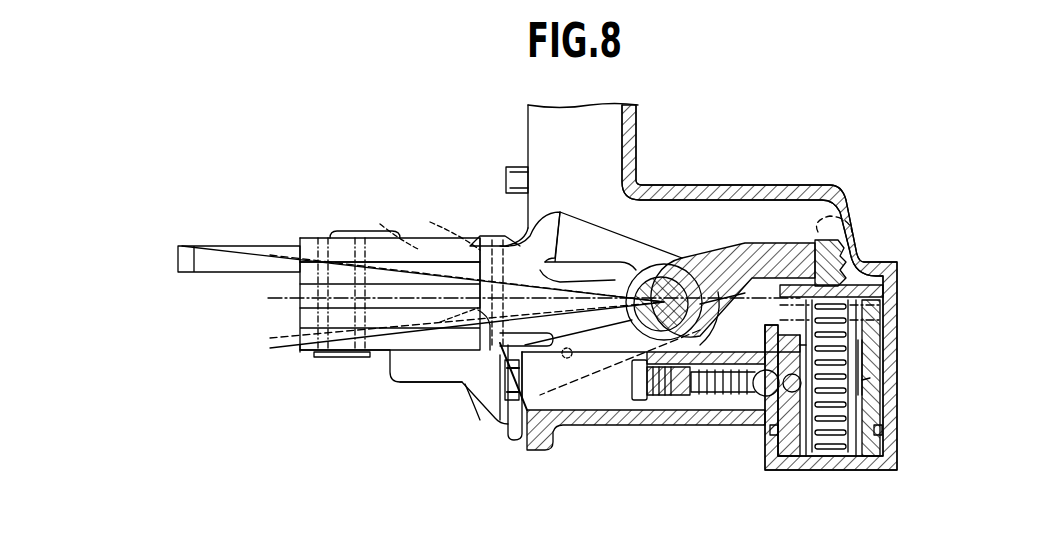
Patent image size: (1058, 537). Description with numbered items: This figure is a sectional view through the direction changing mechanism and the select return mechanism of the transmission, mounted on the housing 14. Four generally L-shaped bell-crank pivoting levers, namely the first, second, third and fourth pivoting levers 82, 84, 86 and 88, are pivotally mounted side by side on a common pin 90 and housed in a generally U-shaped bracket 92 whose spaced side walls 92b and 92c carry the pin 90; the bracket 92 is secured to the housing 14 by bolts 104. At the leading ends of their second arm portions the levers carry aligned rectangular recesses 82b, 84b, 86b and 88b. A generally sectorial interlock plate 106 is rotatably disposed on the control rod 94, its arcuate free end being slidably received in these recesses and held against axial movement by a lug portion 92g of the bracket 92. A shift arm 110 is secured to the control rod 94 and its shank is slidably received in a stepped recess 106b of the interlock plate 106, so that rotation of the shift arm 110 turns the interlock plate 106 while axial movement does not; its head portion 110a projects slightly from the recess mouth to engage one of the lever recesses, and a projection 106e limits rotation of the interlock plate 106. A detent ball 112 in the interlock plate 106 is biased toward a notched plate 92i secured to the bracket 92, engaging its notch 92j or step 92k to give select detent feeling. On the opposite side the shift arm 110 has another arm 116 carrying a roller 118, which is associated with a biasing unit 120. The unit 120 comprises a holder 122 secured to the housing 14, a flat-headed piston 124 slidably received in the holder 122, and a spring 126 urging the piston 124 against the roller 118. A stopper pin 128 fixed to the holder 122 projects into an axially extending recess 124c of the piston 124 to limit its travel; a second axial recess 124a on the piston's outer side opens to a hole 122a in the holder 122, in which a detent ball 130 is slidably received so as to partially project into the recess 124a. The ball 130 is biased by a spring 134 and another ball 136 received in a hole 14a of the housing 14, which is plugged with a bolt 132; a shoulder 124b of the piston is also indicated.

The housing 14 is at (640, 122).
The hole 14a is at (672, 402).
The first pivoting lever 82 is at (300, 328).
The rectangular recess 82b is at (480, 347).
The second pivoting lever 84 is at (300, 306).
The rectangular recess 84b is at (436, 336).
The third pivoting lever 86 is at (300, 284).
The rectangular recess 86b is at (391, 222).
The fourth pivoting lever 88 is at (224, 258).
The rectangular recess 88b is at (446, 226).
The common pin 90 is at (330, 358).
The bracket 92 is at (370, 356).
The side wall 92b is at (300, 352).
The side wall 92c is at (320, 240).
The lug portion 92g is at (553, 340).
The notched plate 92i is at (408, 384).
The notch 92j is at (506, 404).
The step 92k is at (490, 372).
The control rod 94 is at (683, 265).
The bolt 104 is at (507, 180).
The interlock plate 106 is at (600, 372).
The stepped recess 106b is at (556, 280).
The projection 106e is at (488, 243).
The shift arm 110 is at (590, 268).
The head portion 110a is at (485, 368).
The detent ball 112 is at (528, 450).
The arm 116 is at (743, 255).
The roller 118 is at (824, 238).
The biasing unit 120 is at (790, 458).
The holder 122 is at (886, 470).
The hole 122a is at (782, 332).
The piston 124 is at (864, 290).
The axially extending recess 124a is at (817, 458).
The sleeve shoulder 124b is at (775, 402).
The axially extending recess 124c is at (862, 380).
The spring 126 is at (826, 448).
The stopper pin 128 is at (860, 458).
The detent ball 130 is at (790, 393).
The bolt 132 is at (641, 402).
The spring 134 is at (710, 396).
The ball 136 is at (762, 372).